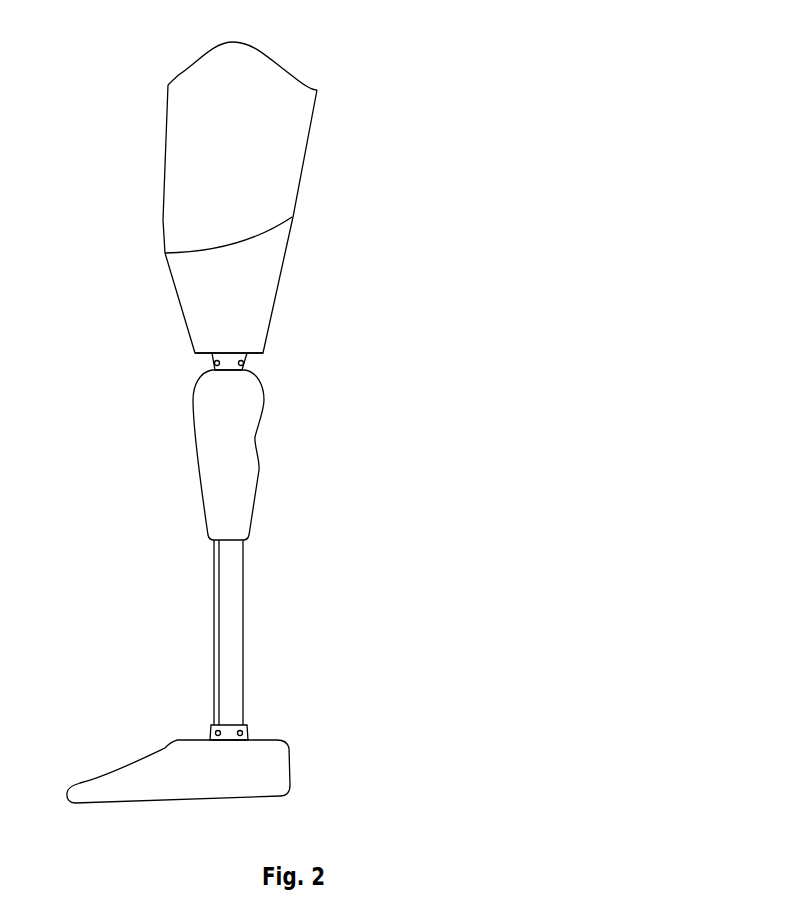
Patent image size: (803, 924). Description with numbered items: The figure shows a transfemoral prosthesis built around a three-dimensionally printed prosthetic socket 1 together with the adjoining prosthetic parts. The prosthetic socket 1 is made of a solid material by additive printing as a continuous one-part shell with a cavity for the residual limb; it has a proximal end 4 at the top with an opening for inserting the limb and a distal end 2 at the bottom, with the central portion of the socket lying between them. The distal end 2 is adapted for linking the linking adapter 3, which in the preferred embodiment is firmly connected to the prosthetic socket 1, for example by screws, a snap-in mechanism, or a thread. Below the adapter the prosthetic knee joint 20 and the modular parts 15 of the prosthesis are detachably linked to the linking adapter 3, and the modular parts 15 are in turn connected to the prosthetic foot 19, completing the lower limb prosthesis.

The prosthetic socket 1 is at (410, 327).
The distal end 2 is at (287, 255).
The linking adapter 3 is at (213, 362).
The proximal end 4 is at (317, 97).
The modular parts 15 is at (244, 615).
The prosthetic foot 19 is at (287, 767).
The prosthetic knee joint 20 is at (207, 508).